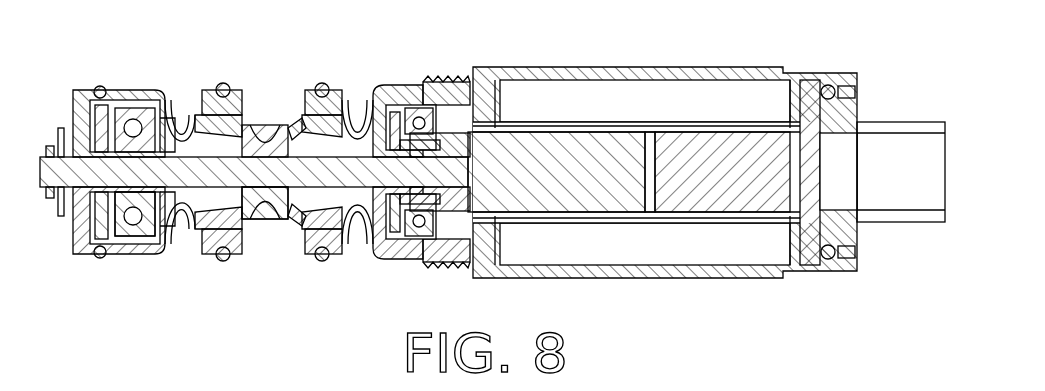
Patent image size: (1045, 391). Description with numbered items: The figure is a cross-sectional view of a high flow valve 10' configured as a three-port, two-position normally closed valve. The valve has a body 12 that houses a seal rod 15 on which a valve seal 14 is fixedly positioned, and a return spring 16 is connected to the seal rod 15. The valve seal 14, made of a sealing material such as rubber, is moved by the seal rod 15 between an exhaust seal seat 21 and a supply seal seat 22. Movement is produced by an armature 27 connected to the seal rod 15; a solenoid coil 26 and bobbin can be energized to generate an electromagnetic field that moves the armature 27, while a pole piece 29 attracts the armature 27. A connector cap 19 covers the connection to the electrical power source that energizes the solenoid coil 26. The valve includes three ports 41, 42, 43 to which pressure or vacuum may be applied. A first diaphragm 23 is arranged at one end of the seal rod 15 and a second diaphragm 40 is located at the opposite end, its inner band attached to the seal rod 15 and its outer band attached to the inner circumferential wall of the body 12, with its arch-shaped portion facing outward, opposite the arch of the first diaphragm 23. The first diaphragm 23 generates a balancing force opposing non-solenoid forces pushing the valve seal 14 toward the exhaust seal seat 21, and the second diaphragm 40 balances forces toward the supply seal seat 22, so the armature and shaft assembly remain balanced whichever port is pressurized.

The high flow valve 10' is at (699, 145).
The body 12 is at (143, 90).
The valve seal 14 is at (278, 125).
The seal rod 15 is at (72, 170).
The return spring 16 is at (68, 112).
The connector cap 19 is at (895, 224).
The exhaust seal seat 21 is at (250, 234).
The supply seal seat 22 is at (300, 235).
The first diaphragm 23 is at (432, 85).
The solenoid coil 26 is at (595, 267).
The armature 27 is at (492, 216).
The pole piece 29 is at (762, 214).
The second diaphragm 40 is at (112, 240).
The port 41 is at (356, 83).
The port 42 is at (260, 92).
The port 43 is at (180, 222).